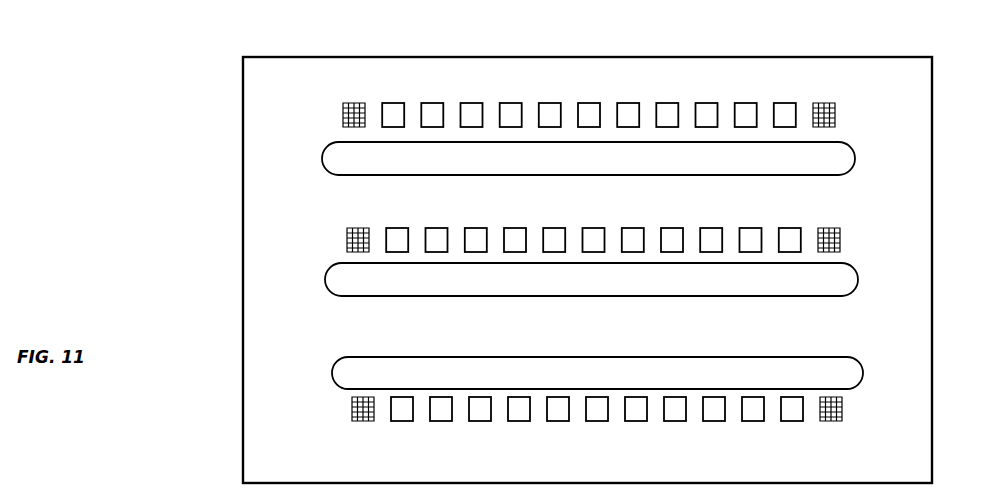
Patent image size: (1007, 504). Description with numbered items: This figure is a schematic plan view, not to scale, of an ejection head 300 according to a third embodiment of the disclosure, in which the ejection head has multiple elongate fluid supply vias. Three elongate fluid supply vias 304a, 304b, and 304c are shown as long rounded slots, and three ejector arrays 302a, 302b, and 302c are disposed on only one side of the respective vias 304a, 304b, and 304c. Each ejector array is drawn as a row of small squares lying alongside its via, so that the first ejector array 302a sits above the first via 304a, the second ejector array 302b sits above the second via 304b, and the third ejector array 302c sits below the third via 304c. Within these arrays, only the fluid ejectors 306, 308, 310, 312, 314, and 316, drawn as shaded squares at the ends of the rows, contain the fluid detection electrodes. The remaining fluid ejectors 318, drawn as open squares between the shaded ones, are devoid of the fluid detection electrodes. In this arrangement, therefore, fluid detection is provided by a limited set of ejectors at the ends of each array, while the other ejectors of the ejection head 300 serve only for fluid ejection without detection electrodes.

The ejection head 300 is at (196, 150).
The ejector array 302a is at (587, 71).
The ejector array 302b is at (589, 213).
The ejector array 302c is at (591, 417).
The elongate fluid supply via 304a is at (588, 158).
The elongate fluid supply via 304b is at (591, 279).
The elongate fluid supply via 304c is at (597, 373).
The fluid ejector 306 is at (352, 109).
The fluid ejector 308 is at (828, 111).
The fluid ejector 310 is at (358, 241).
The fluid ejector 312 is at (832, 239).
The fluid ejector 314 is at (366, 411).
The fluid ejector 316 is at (833, 406).
The fluid ejector 318 is at (474, 114).